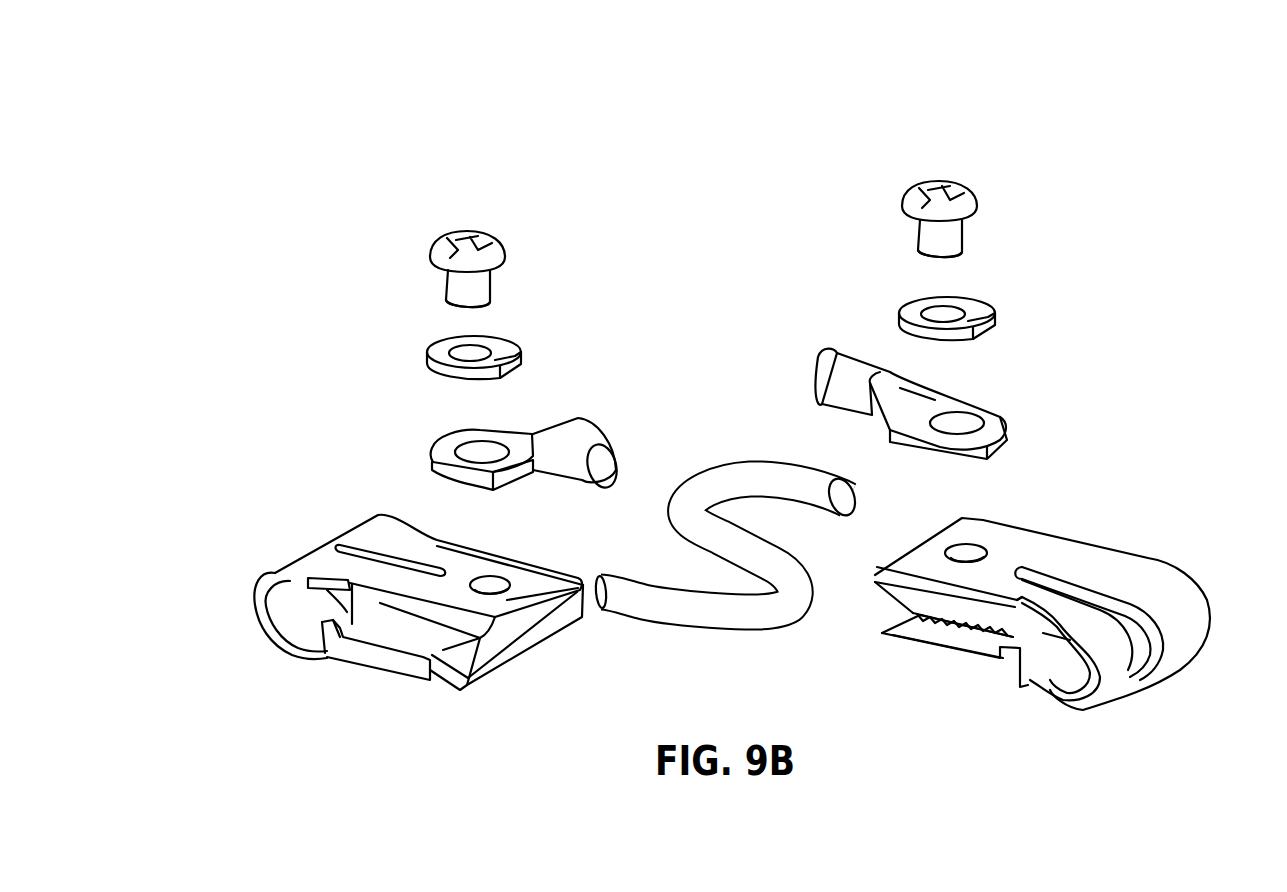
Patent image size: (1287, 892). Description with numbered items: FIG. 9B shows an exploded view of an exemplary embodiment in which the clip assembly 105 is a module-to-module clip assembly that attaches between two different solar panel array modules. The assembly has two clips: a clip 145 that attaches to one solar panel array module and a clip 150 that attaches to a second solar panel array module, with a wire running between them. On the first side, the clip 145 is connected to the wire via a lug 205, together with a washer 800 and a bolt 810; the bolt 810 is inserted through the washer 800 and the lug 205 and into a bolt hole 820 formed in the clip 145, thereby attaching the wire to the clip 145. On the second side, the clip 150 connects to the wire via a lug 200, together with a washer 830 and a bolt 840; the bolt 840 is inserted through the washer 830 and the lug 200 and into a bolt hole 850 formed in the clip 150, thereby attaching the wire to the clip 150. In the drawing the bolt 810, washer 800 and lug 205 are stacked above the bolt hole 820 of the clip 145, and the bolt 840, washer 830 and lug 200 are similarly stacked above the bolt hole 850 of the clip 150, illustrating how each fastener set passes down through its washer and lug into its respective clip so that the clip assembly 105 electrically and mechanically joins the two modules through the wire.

The clip assembly 105 is at (390, 170).
The bolt 810 is at (522, 272).
The washer 800 is at (553, 350).
The lug 205 is at (426, 431).
The clip 145 is at (385, 498).
The bolt hole 820 is at (510, 577).
The bolt 840 is at (995, 225).
The washer 830 is at (1026, 318).
The lug 200 is at (1043, 428).
The clip 150 is at (1250, 627).
The bolt hole 850 is at (982, 543).